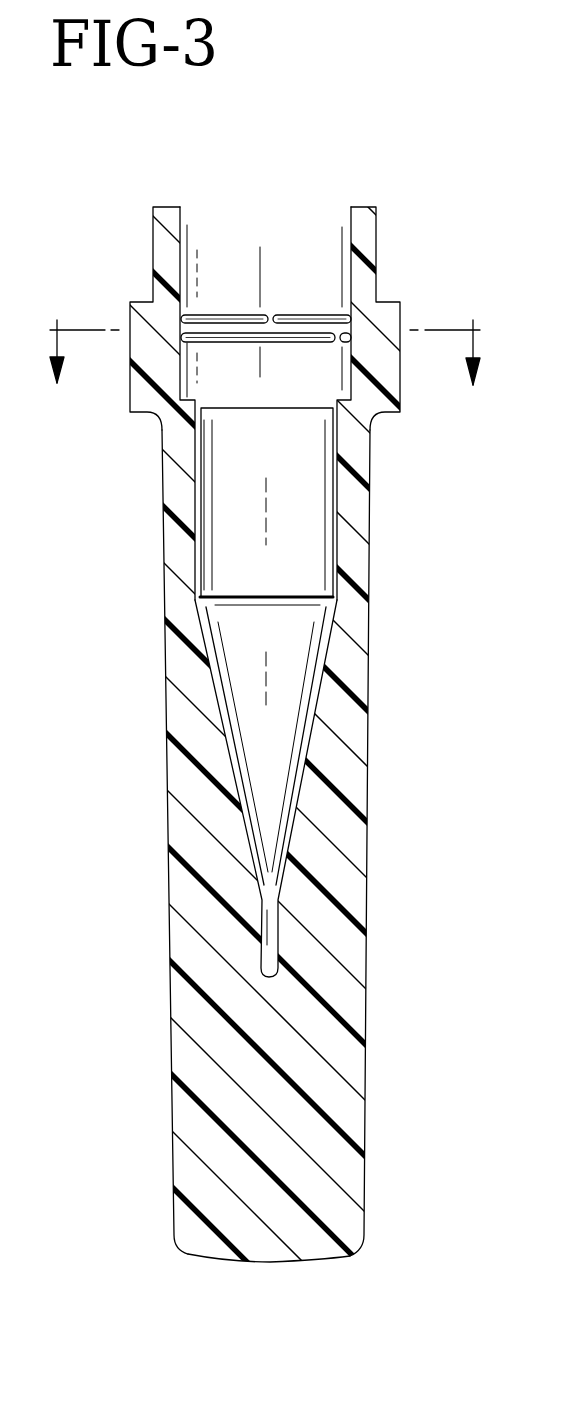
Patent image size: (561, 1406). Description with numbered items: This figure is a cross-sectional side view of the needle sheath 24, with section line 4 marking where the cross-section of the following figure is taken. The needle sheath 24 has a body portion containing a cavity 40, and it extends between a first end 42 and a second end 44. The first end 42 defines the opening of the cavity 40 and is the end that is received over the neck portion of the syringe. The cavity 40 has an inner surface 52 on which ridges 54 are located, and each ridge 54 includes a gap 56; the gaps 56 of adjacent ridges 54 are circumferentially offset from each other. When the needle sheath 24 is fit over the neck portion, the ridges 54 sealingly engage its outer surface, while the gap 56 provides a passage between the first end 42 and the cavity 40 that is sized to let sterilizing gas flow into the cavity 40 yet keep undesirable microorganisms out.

The section line 4- 4 is at (265, 338).
The needle sheath 24 is at (393, 829).
The cavity 40 is at (240, 655).
The first end 42 is at (162, 210).
The second end 44 is at (288, 1262).
The inner surface 52 is at (365, 497).
The ridges 54 is at (203, 313).
The gap 56 is at (274, 313).